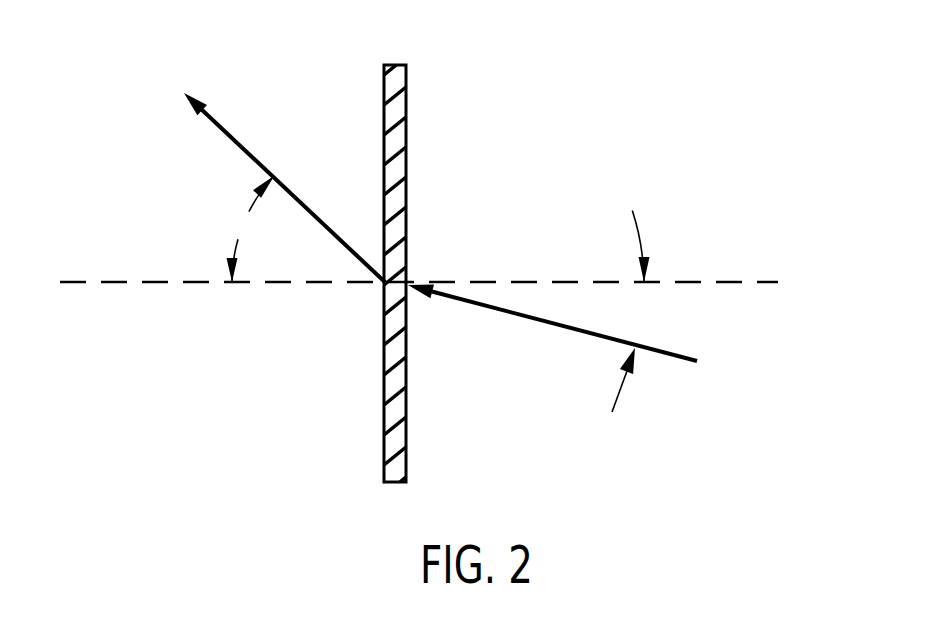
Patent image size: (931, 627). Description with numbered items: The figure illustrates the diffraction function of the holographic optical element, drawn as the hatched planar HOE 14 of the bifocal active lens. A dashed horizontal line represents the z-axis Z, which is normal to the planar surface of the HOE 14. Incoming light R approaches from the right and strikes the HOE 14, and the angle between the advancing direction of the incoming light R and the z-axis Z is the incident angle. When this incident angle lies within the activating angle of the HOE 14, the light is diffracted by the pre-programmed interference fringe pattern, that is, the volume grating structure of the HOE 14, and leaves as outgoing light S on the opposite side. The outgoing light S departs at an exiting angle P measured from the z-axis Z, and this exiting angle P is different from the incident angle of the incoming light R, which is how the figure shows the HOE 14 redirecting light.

The holographic optical element (HOE) 14 is at (438, 81).
The outgoing light S is at (270, 179).
The incoming light R is at (568, 339).
The z-axis Z is at (434, 283).
The exiting angle P is at (251, 229).